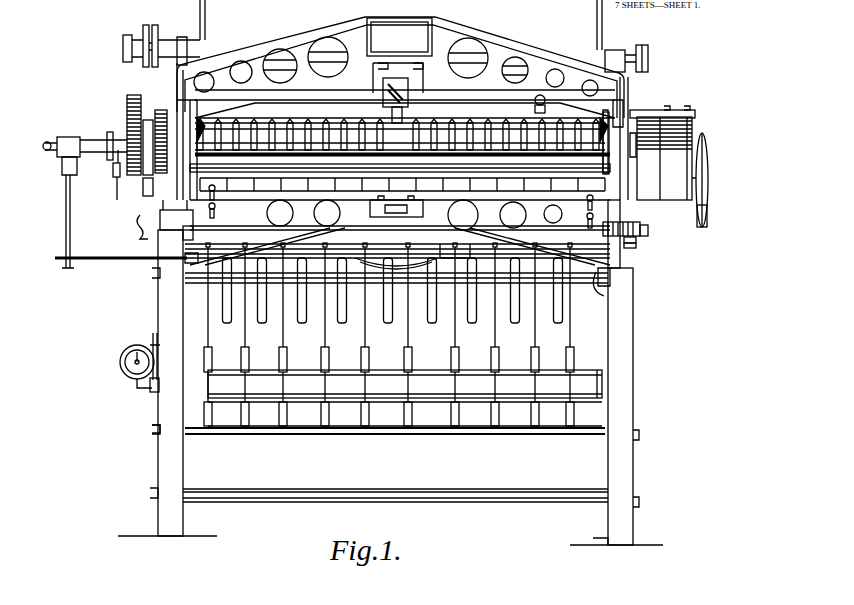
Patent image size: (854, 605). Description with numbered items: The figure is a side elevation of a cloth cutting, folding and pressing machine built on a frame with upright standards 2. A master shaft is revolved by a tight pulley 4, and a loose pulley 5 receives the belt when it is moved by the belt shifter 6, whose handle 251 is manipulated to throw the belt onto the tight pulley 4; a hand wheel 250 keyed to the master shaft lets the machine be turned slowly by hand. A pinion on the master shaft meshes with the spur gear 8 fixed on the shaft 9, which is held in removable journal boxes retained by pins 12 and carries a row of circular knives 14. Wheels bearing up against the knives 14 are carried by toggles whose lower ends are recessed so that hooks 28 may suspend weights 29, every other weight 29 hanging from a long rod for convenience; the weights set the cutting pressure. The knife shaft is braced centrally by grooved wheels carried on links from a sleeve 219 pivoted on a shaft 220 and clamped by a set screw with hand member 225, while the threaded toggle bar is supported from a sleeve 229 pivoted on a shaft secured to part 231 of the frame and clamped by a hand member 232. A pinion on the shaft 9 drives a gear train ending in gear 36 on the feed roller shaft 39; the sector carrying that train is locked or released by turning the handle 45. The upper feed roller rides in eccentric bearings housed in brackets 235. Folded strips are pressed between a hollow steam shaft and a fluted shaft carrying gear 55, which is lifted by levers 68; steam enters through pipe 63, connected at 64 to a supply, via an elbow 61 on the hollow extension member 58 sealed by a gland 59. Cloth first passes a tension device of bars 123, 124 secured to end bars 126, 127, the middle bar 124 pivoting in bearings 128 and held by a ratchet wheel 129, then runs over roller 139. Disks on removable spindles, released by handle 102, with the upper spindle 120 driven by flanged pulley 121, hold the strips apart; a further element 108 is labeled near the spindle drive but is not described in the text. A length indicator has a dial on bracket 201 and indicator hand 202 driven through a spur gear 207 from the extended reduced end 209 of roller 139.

The standards 2 is at (168, 498).
The tight pulley 4 is at (650, 239).
The loose pulley 5 is at (652, 238).
The belt shifter 6 is at (637, 120).
The spur gear 8 is at (129, 105).
The shaft 9 is at (340, 127).
The pins 12 is at (173, 96).
The circular knives 14 is at (285, 122).
The hooks 28 is at (404, 342).
The weights 29 is at (404, 361).
The gear 36 is at (141, 222).
The feed roller shaft 39 is at (226, 200).
The handle 45 is at (170, 232).
The gear 55 is at (145, 198).
The hollow extension member 58 is at (110, 138).
The gland 59 is at (113, 168).
The elbow 61 is at (70, 136).
The pipe 63 is at (206, 29).
The connection 64 is at (50, 142).
The levers 68 is at (597, 45).
The handle 102 is at (648, 66).
The shaft 108 is at (123, 46).
The spindle 120 is at (470, 56).
The flanged pulley 121 is at (147, 26).
The bar 123 is at (398, 258).
The middle bar 124 is at (318, 243).
The end bar 126 is at (193, 232).
The end bar 127 is at (198, 258).
The bearings 128 is at (632, 246).
The ratchet wheel 129 is at (632, 240).
The roller 139 is at (312, 402).
The bracket 201 is at (183, 400).
The indicator hand 202 is at (124, 372).
The spur gear 207 is at (156, 340).
The extended reduced end 209 is at (185, 431).
The sleeve 219 is at (392, 82).
The shaft 220 is at (410, 90).
The hand member 225 is at (400, 84).
The sleeve 229 is at (402, 215).
The part of frame 231 is at (428, 246).
The hand member 232 is at (432, 158).
The brackets 235 is at (619, 144).
The hand wheel 250 is at (708, 186).
The handle 251 is at (536, 98).